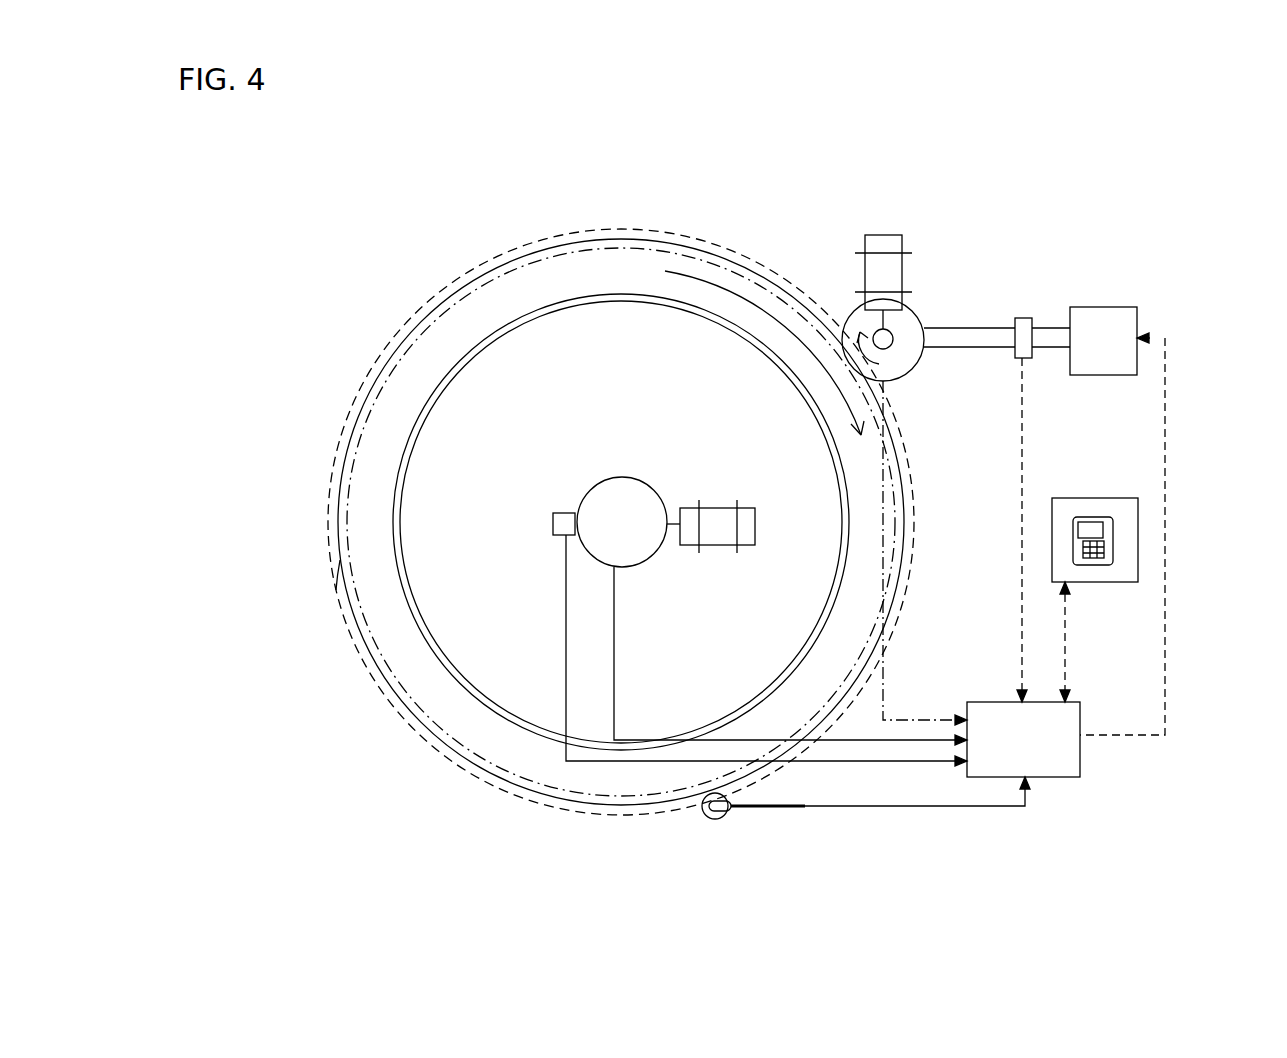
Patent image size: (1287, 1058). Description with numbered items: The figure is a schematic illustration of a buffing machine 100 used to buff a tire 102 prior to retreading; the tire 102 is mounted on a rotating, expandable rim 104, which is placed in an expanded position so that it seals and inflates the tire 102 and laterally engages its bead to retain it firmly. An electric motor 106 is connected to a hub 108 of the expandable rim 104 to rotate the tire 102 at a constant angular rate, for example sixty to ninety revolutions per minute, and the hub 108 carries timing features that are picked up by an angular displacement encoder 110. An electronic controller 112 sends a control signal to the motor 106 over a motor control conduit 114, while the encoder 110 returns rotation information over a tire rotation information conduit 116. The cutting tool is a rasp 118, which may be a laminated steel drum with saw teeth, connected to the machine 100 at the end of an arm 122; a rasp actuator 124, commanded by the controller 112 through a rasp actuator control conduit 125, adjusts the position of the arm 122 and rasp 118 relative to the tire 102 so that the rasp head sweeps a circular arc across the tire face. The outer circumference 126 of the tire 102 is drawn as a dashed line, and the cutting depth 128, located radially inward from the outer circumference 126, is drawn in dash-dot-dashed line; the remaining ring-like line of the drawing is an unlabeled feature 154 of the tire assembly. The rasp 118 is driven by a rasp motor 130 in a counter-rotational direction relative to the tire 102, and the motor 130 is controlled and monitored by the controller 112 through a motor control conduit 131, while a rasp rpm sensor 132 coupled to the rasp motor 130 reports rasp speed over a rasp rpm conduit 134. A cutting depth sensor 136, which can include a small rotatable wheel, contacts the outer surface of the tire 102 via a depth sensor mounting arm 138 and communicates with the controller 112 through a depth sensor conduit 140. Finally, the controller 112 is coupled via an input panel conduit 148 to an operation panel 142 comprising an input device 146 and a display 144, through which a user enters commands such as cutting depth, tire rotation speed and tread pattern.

The buffing machine 100 is at (840, 205).
The tire 102 is at (573, 278).
The expandable rim 104 is at (440, 463).
The electric motor 106 is at (712, 545).
The hub 108 is at (618, 477).
The angular displacement encoder 110 is at (565, 513).
The electronic controller 112 is at (1085, 765).
The motor control conduit 114 is at (614, 660).
The tire rotation information conduit 116 is at (565, 640).
The rasp 118 is at (920, 312).
The arm 122 is at (1047, 348).
The rasp actuator 124 is at (1102, 307).
The rasp actuator control conduit 125 is at (1165, 440).
The outer circumference 126 is at (323, 518).
The cutting depth 128 is at (360, 668).
The rasp motor 130 is at (863, 275).
The motor control conduit 131 is at (890, 695).
The rasp rpm sensor 132 is at (1022, 317).
The rasp rpm conduit 134 is at (1018, 555).
The cutting depth sensor 136 is at (722, 818).
The depth sensor mounting arm 138 is at (780, 808).
The depth sensor conduit 140 is at (975, 808).
The operation panel 142 is at (1078, 498).
The display 144 is at (1095, 530).
The input device 146 is at (1090, 582).
The input panel conduit 148 is at (1068, 650).
The housing wall 154 is at (336, 590).